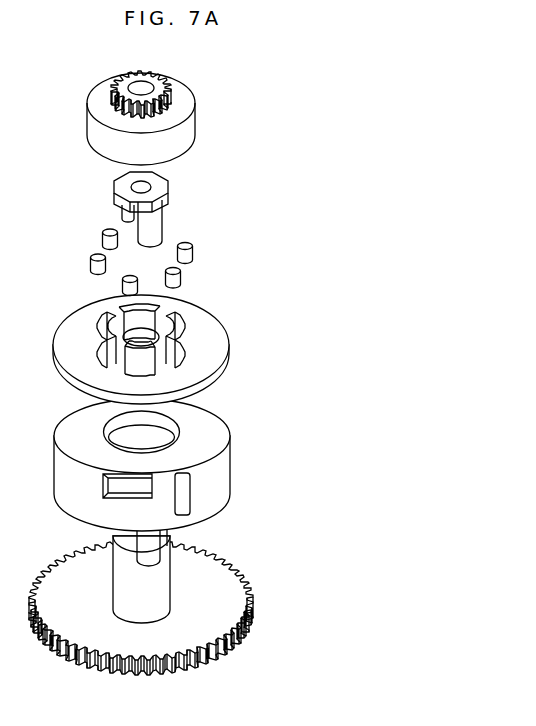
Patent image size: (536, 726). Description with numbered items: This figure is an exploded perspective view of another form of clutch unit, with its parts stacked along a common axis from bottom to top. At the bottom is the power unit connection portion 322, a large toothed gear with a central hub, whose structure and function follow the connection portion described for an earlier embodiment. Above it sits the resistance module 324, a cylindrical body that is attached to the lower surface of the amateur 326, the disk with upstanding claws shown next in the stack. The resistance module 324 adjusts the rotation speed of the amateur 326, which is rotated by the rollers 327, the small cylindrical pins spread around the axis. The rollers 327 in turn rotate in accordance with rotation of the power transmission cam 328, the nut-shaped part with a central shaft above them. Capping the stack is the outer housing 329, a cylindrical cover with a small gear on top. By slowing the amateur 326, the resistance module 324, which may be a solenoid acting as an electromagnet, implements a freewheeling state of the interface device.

The power unit connection portion 322 is at (253, 595).
The resistance module 324 is at (231, 446).
The amateur 326 is at (230, 344).
The rollers 327 is at (194, 250).
The power transmission cam 328 is at (170, 186).
The outer housing 329 is at (195, 112).